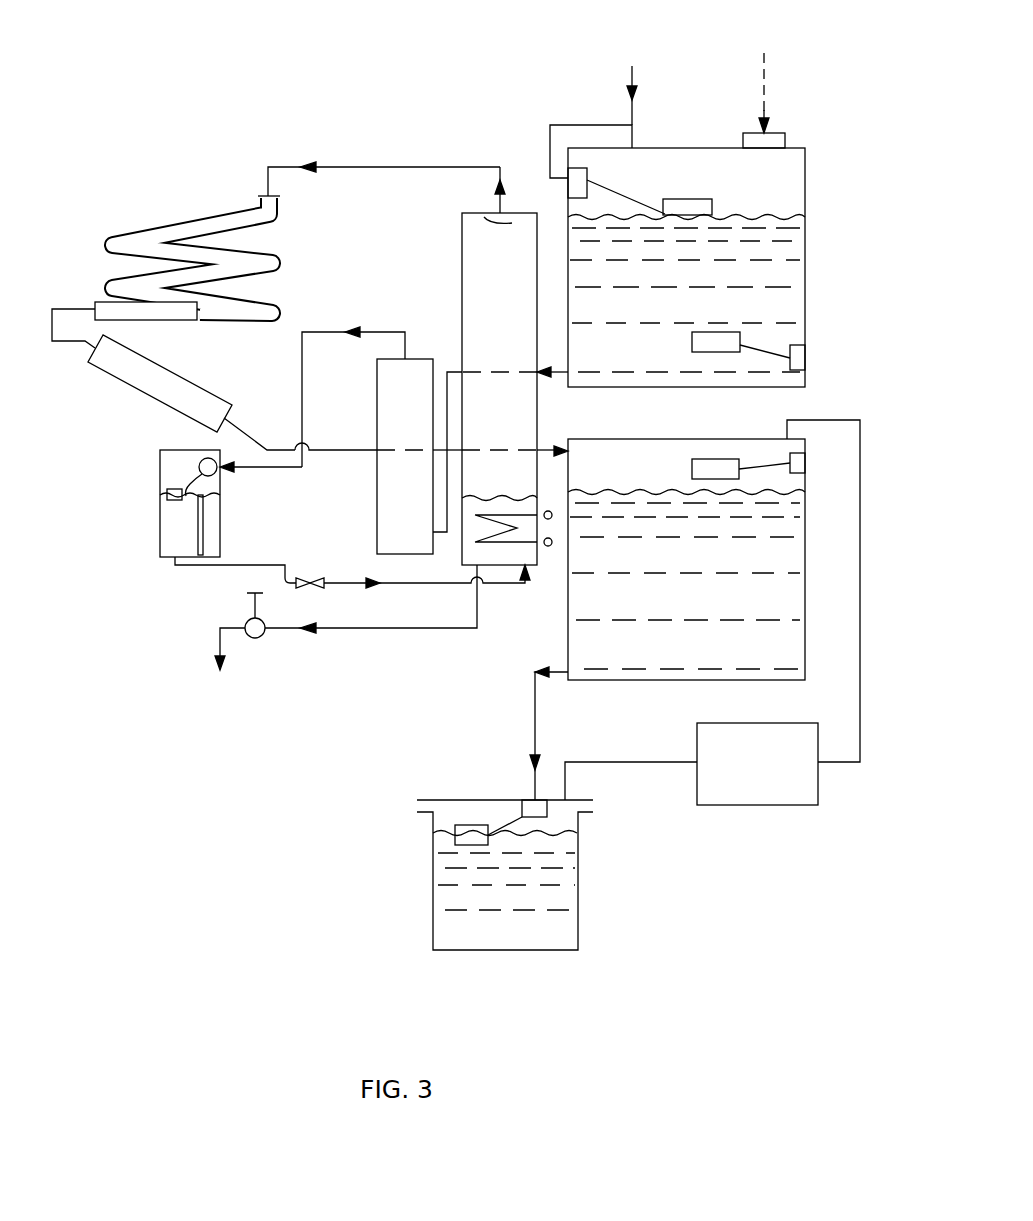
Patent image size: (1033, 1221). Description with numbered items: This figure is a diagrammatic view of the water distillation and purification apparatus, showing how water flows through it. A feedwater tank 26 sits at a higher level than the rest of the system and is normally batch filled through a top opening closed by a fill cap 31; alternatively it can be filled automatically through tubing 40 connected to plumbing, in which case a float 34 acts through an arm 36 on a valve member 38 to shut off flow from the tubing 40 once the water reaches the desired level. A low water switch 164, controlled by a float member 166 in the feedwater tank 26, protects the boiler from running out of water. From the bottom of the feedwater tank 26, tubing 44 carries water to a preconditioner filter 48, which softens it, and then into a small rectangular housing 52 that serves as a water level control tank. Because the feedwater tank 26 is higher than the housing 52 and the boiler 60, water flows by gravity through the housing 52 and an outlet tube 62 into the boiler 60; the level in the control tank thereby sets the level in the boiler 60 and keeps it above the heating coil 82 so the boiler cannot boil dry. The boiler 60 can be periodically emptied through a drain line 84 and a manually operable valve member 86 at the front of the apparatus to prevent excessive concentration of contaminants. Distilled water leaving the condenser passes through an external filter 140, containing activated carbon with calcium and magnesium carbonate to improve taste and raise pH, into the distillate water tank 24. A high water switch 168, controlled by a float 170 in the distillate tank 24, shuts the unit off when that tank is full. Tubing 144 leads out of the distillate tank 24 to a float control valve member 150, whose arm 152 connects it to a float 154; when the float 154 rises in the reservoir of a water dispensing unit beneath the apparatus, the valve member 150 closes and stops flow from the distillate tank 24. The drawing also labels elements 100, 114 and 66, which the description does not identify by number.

The distillate water tank 24 is at (805, 570).
The feedwater tank 26 is at (811, 268).
The fill cap 31 is at (782, 140).
The float 34 is at (712, 208).
The arm 36 is at (625, 195).
The valve member 38 is at (578, 180).
The tubing 40 is at (575, 128).
The tubing 44 is at (450, 368).
The preconditioner filter 48 is at (404, 498).
The water level control tank housing 52 is at (148, 512).
The boiler 60 is at (452, 248).
The outlet tube 62 is at (260, 567).
The level bar 66 is at (205, 529).
The heating coil 82 is at (508, 543).
The drain line 84 is at (340, 628).
The manually operable valve member 86 is at (258, 638).
The vapor line 100 is at (398, 167).
The condenser coil 114 is at (131, 224).
The external filter 140 is at (182, 386).
The tubing 144 is at (535, 722).
The float control valve member 150 is at (540, 800).
The arm 152 is at (497, 822).
The float 154 is at (468, 825).
The low water switch 164 is at (806, 355).
The float member 166 is at (752, 334).
The high water switch 168 is at (798, 464).
The float 170 is at (722, 459).